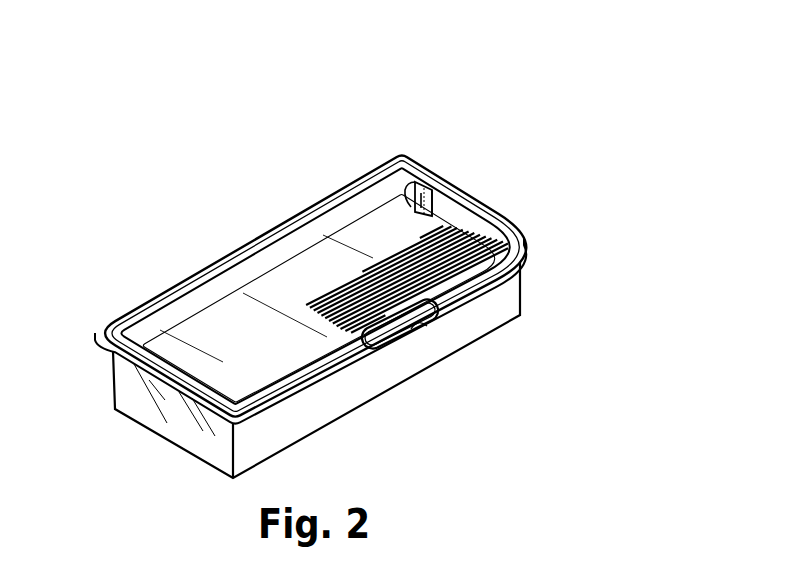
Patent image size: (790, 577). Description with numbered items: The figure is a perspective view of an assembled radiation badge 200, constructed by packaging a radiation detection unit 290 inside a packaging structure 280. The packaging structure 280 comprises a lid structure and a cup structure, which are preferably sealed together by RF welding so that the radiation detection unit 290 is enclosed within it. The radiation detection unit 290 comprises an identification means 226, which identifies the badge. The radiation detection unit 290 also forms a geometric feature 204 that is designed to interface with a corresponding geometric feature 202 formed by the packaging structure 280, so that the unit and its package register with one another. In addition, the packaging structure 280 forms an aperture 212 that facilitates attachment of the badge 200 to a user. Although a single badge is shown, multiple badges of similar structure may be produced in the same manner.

The radiation badge 200 is at (573, 62).
The geometric feature of the packaging structure 202 is at (430, 198).
The geometric feature of the radiation detection unit 204 is at (411, 212).
The aperture 212 is at (430, 333).
The identification means 226 is at (133, 208).
The packaging structure 280 is at (398, 393).
The radiation detection unit 290 is at (157, 340).